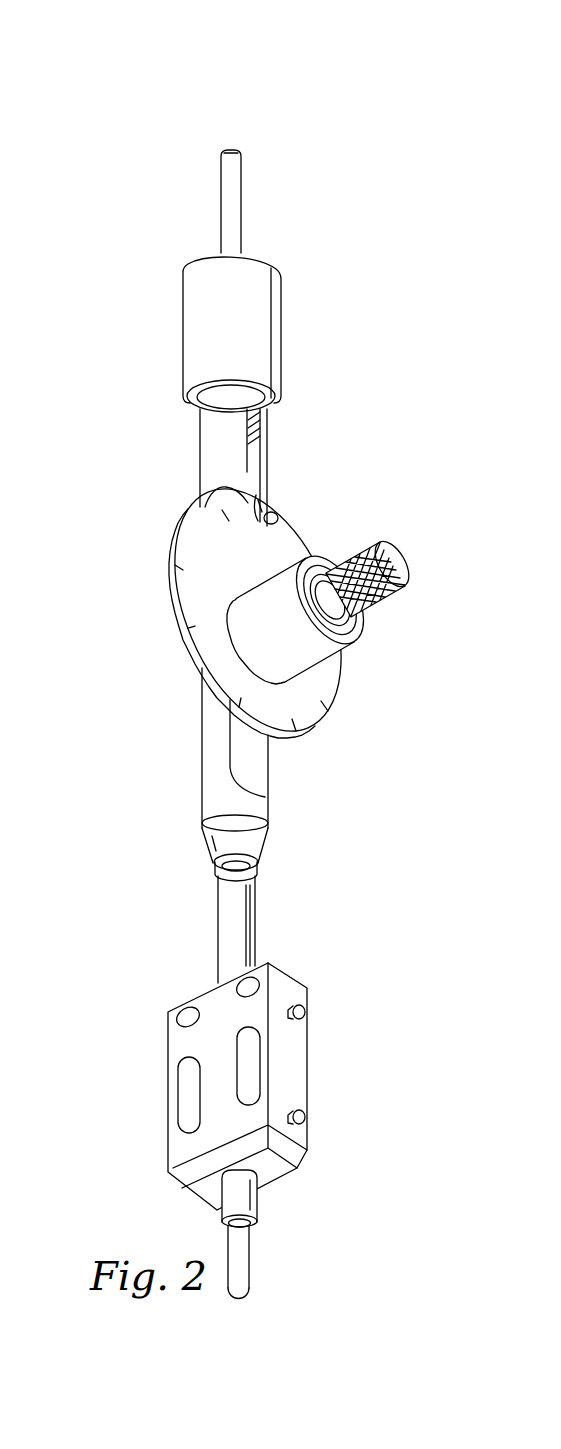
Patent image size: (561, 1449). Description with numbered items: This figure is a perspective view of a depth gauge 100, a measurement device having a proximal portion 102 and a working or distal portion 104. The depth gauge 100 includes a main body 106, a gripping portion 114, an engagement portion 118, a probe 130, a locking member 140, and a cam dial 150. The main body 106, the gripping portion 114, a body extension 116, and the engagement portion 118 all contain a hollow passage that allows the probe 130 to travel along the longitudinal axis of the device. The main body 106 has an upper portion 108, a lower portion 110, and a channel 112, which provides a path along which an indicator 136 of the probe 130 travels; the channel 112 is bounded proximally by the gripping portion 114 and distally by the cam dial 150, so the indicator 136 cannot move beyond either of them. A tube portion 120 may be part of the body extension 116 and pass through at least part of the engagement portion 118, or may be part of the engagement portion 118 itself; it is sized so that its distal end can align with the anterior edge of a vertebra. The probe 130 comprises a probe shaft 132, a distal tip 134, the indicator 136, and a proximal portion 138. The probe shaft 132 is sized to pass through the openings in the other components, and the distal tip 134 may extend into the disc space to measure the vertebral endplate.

The depth gauge 100 is at (283, 66).
The proximal portion 102 is at (126, 328).
The distal portion 104 is at (122, 1115).
The main body 106 is at (195, 738).
The upper portion 108 is at (199, 463).
The lower portion 110 is at (268, 860).
The channel 112 is at (262, 440).
The gripping portion 114 is at (281, 346).
The body extension 116 is at (218, 930).
The engagement portion 118 is at (310, 1068).
The tube portion 120 is at (258, 1205).
The probe 130 is at (248, 210).
The probe shaft 132 is at (250, 1262).
The distal tip 134 is at (240, 1300).
The indicator 136 is at (278, 521).
The proximal portion 138 is at (220, 183).
The locking member 140 is at (397, 585).
The cam dial 150 is at (327, 715).